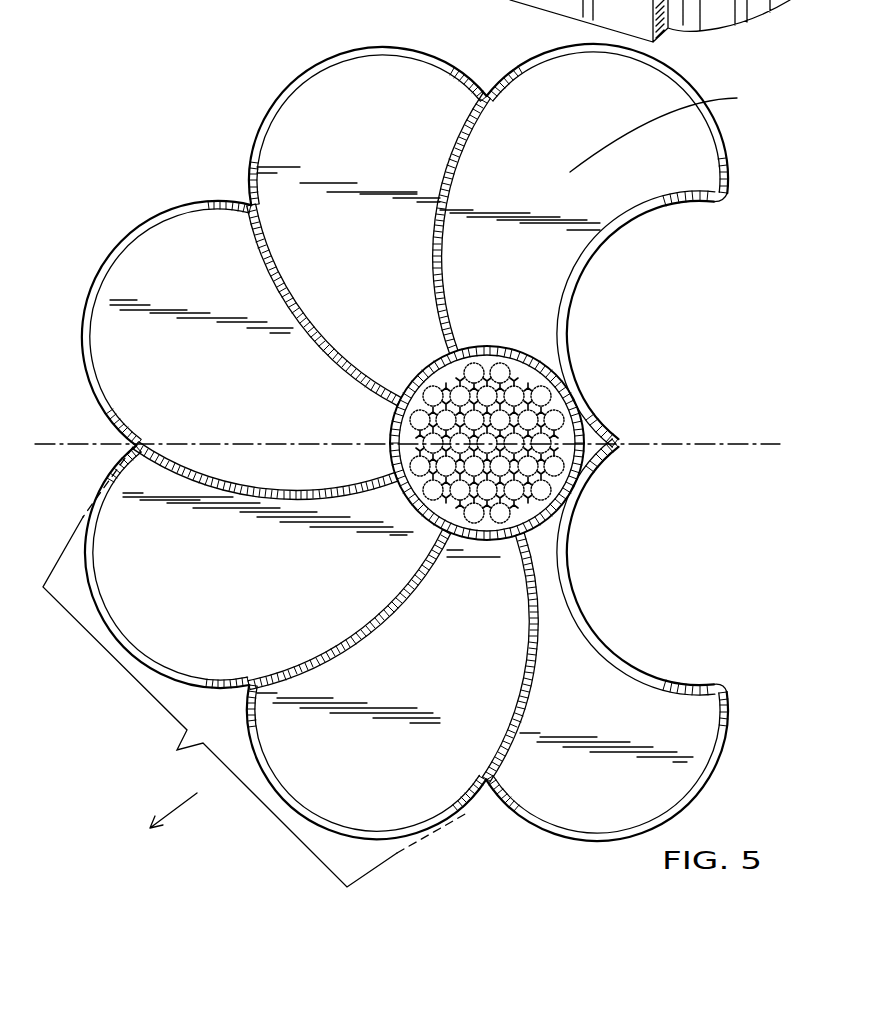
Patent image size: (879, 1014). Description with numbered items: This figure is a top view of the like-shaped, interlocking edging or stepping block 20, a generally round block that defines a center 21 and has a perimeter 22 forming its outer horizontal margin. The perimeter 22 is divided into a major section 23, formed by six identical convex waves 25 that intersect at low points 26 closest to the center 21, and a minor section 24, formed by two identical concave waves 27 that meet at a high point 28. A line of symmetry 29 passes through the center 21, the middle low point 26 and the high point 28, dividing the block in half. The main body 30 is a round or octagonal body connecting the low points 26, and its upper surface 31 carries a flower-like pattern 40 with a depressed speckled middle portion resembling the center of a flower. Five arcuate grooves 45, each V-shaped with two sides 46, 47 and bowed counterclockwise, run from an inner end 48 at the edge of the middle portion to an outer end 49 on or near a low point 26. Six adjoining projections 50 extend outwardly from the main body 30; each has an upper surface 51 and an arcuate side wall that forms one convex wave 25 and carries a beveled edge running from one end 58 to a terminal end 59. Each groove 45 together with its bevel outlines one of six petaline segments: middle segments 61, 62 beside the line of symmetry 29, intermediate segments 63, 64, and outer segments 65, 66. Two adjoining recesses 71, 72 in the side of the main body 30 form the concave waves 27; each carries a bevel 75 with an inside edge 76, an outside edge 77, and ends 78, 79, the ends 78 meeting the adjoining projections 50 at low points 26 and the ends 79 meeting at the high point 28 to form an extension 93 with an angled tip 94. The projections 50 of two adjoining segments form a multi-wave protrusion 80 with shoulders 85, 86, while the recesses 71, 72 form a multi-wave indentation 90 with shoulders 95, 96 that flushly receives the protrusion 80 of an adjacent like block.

The edging or stepping block 20 is at (187, 111).
The center 21 is at (483, 440).
The perimeter 22 is at (325, 51).
The major section 23 is at (394, 47).
The minor section 24 is at (690, 683).
The convex wave 25 is at (255, 125).
The low point 26 is at (246, 202).
The concave wave 27 is at (618, 235).
The high point 28 is at (623, 447).
The line of symmetry 29 is at (740, 440).
The main body 30 is at (664, 129).
The upper surface 31 is at (327, 433).
The pattern 40 is at (372, 260).
The arcuate groove 45 is at (269, 257).
The side of groove 46 is at (298, 328).
The side of groove 47 is at (303, 317).
The end of groove 48 is at (402, 392).
The end of groove 49 is at (240, 204).
The projection 50 is at (135, 278).
The upper surface of projection 51 is at (194, 271).
The end of projection 58 is at (254, 201).
The terminal end of projection 59 is at (244, 203).
The middle petaline segment 61 is at (236, 395).
The middle petaline segment 62 is at (254, 601).
The intermediate petaline segment 63 is at (366, 125).
The intermediate petaline segment 64 is at (449, 670).
The outer petaline segment 65 is at (529, 268).
The outer petaline segment 66 is at (597, 705).
The recess 71 is at (590, 292).
The recess 72 is at (580, 540).
The bevel 75 is at (684, 194).
The inside edge of bevel 76 is at (573, 340).
The outside edge of bevel 77 is at (597, 373).
The end of bevel 78 is at (720, 198).
The end of bevel 79 is at (607, 430).
The multi-wave protrusion 80 is at (220, 702).
The shoulder 85 is at (133, 445).
The shoulder 86 is at (490, 787).
The multi-wave indentation 90 is at (605, 630).
The projection or extension 93 is at (607, 463).
The angled tip 94 is at (620, 440).
The shoulder 95 is at (720, 186).
The shoulder 96 is at (728, 720).